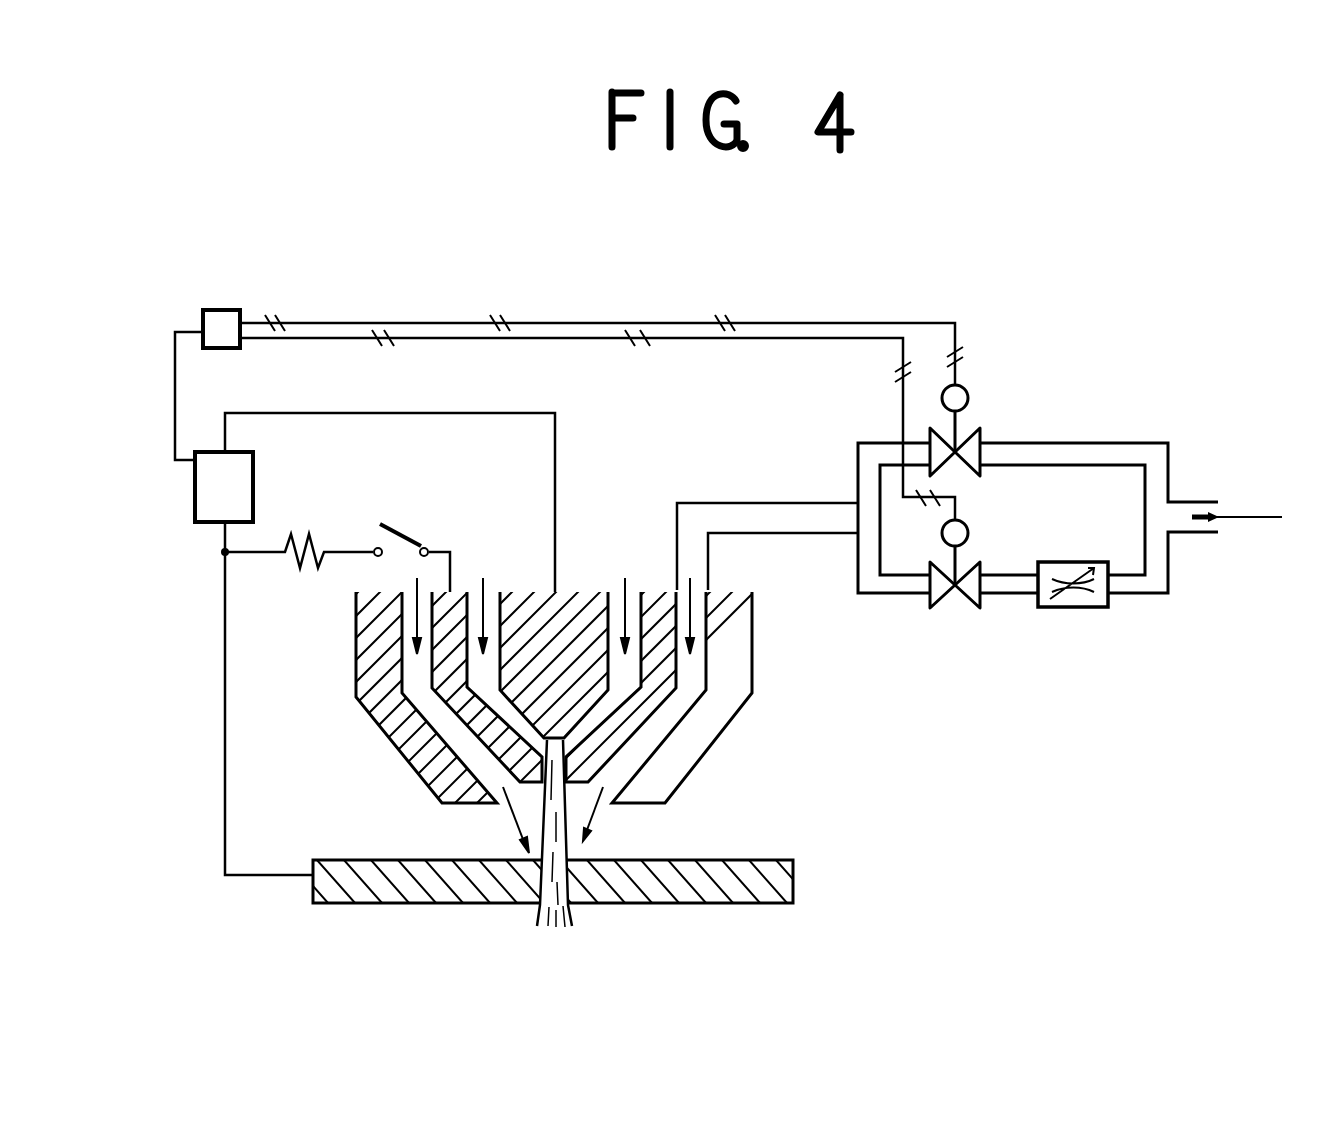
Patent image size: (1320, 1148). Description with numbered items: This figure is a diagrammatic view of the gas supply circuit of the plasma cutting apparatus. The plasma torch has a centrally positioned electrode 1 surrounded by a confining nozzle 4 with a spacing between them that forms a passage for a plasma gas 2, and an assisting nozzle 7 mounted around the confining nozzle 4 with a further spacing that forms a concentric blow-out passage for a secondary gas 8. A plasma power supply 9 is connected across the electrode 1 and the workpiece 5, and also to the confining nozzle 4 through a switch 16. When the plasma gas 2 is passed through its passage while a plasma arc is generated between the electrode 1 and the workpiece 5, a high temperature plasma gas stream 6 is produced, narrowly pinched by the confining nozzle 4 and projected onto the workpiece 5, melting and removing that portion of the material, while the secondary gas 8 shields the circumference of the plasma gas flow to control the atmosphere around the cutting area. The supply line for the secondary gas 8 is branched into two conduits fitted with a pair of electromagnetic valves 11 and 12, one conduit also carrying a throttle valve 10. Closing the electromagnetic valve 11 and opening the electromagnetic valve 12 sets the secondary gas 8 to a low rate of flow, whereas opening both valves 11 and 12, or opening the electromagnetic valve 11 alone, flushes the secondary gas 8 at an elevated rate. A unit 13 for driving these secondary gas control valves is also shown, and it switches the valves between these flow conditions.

The electrode 1 is at (532, 596).
The plasma gas 2 is at (623, 588).
The confining nozzle 4 is at (618, 732).
The workpiece 5 is at (793, 878).
The plasma gas stream 6 is at (562, 845).
The assisting nozzle 7 is at (725, 725).
The secondary gas 8 is at (687, 590).
The plasma power supply 9 is at (255, 482).
The throttle valve 10 is at (1077, 608).
The electromagnetic valve 11 is at (982, 438).
The electromagnetic valve 12 is at (983, 563).
The unit for driving the secondary gas control valves 13 is at (238, 309).
The switch 16 is at (403, 527).